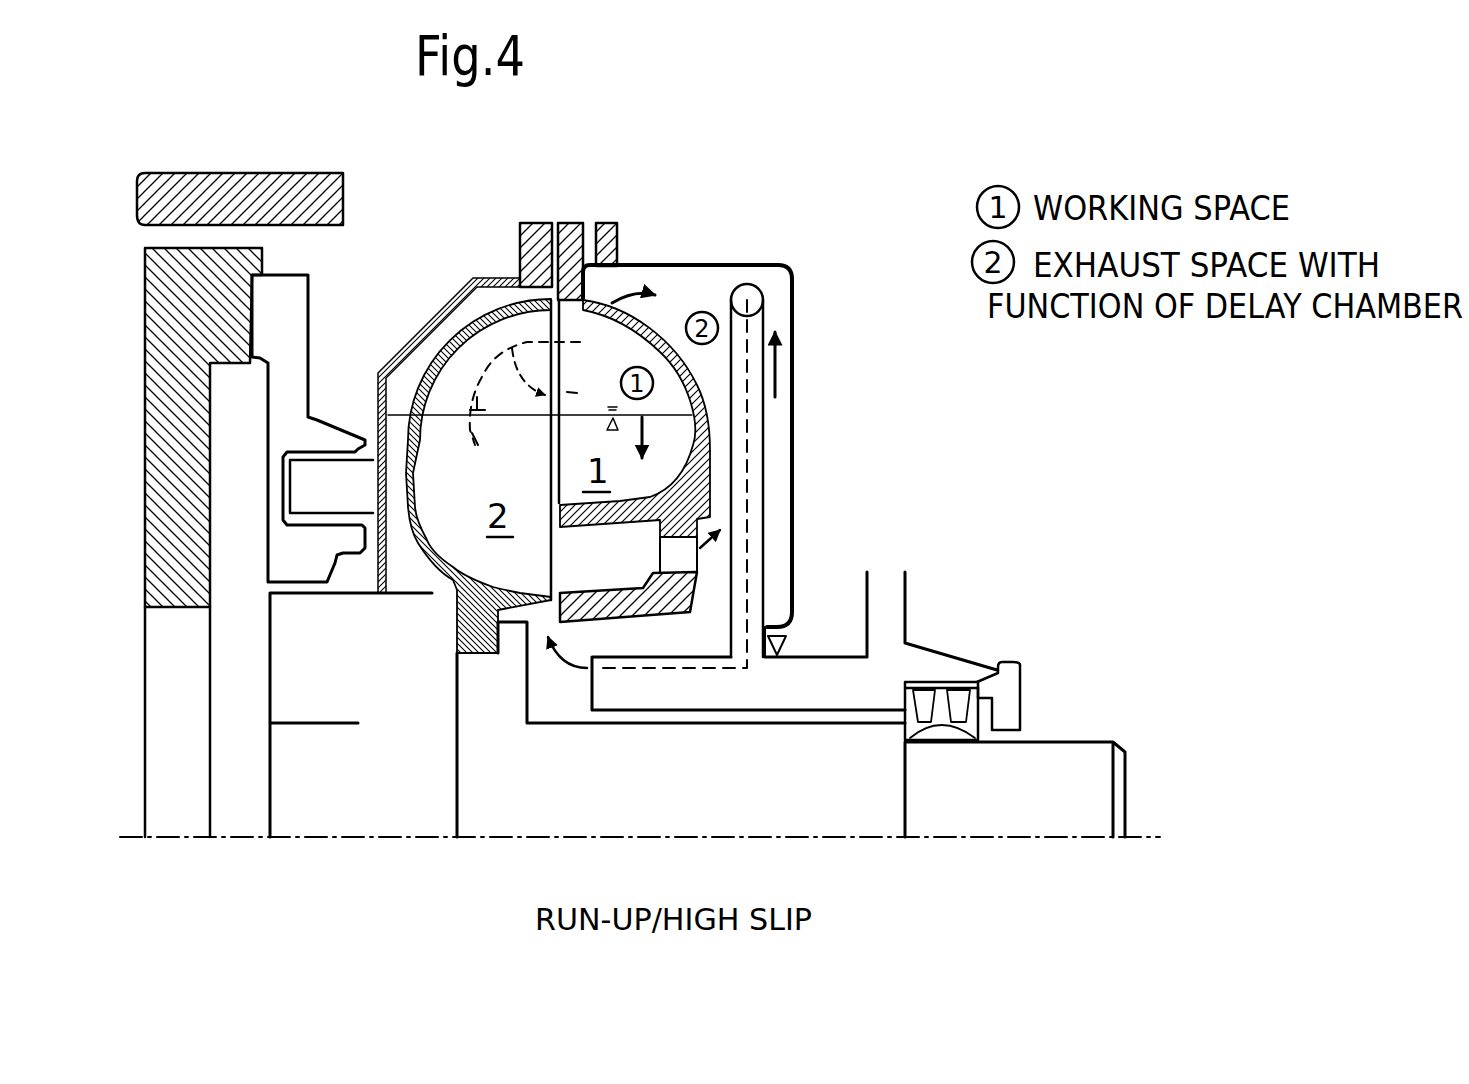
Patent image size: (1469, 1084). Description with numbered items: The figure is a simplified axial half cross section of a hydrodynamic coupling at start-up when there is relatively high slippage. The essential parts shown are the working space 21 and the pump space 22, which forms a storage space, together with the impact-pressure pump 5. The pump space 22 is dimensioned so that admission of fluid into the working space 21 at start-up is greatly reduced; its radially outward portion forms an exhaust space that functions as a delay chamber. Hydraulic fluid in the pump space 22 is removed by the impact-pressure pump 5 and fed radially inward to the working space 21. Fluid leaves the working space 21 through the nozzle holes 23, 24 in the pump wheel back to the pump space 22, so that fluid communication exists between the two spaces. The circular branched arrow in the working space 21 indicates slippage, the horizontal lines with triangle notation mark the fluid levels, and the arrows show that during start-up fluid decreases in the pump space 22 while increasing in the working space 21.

The impact-pressure pump 5 is at (755, 447).
The working space 21 is at (633, 357).
The pump space 22 is at (702, 303).
The nozzle hole 23 is at (627, 556).
The nozzle hole 24 is at (603, 330).